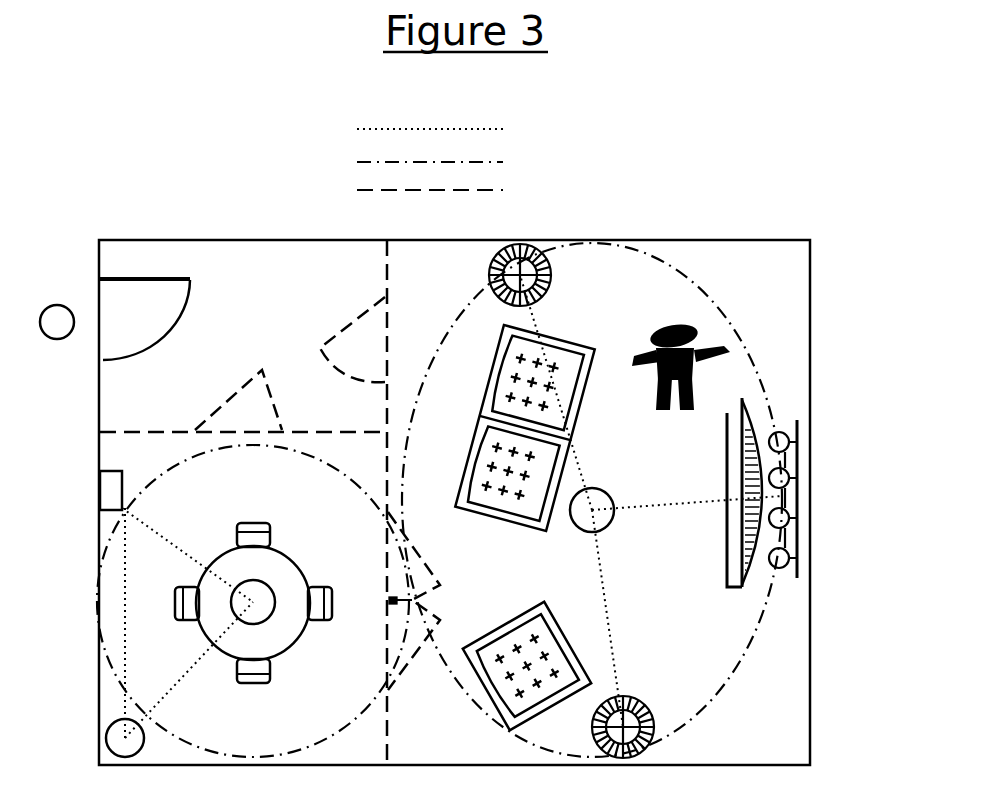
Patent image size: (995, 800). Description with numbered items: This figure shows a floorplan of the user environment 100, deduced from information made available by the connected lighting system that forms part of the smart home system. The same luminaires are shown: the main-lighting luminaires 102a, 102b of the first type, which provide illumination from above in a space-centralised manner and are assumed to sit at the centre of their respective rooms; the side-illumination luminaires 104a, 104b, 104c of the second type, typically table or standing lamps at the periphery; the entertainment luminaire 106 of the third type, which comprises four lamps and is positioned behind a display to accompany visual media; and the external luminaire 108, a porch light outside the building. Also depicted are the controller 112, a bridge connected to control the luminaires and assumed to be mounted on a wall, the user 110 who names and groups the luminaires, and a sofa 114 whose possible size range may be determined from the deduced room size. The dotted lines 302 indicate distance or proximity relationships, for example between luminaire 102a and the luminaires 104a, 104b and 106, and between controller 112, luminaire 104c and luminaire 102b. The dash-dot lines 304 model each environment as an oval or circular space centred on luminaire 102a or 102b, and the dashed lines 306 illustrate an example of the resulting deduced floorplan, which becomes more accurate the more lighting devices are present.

The user environment 100 is at (823, 200).
The luminaire of the first type 102a is at (606, 527).
The luminaire of the first type 102b is at (270, 618).
The luminaire of the second type 104a is at (551, 272).
The luminaire of the second type 104b is at (618, 697).
The luminaire of the second type 104c is at (143, 740).
The luminaire of the third type 106 is at (795, 480).
The luminaire of the fourth type 108 is at (57, 305).
The user 110 is at (682, 323).
The controller 112 is at (122, 473).
The sofa 114 is at (577, 418).
The lines 302 is at (462, 132).
The lines 304 is at (462, 163).
The lines 306 is at (462, 193).